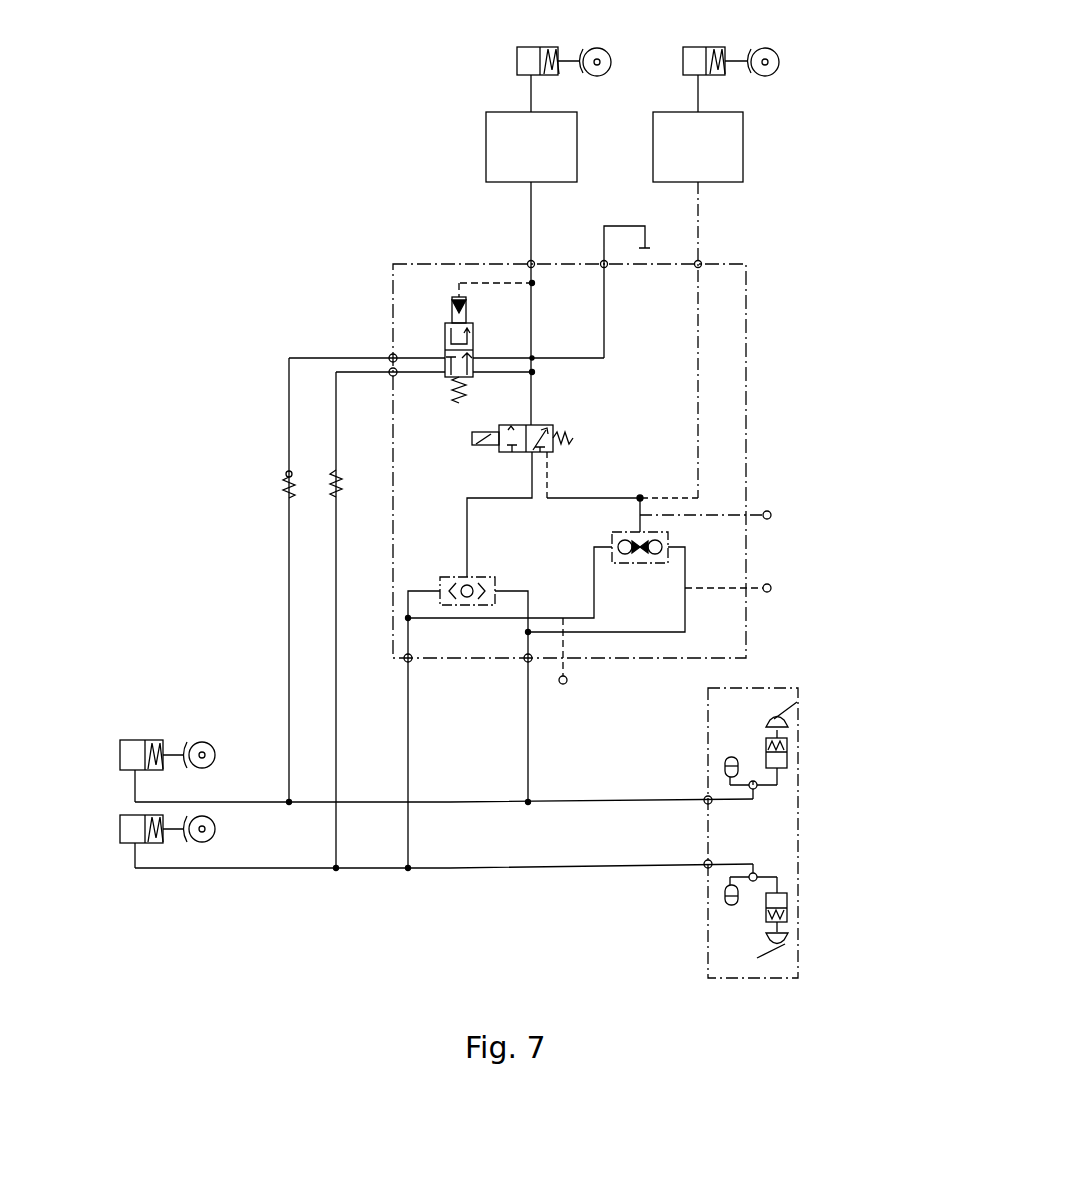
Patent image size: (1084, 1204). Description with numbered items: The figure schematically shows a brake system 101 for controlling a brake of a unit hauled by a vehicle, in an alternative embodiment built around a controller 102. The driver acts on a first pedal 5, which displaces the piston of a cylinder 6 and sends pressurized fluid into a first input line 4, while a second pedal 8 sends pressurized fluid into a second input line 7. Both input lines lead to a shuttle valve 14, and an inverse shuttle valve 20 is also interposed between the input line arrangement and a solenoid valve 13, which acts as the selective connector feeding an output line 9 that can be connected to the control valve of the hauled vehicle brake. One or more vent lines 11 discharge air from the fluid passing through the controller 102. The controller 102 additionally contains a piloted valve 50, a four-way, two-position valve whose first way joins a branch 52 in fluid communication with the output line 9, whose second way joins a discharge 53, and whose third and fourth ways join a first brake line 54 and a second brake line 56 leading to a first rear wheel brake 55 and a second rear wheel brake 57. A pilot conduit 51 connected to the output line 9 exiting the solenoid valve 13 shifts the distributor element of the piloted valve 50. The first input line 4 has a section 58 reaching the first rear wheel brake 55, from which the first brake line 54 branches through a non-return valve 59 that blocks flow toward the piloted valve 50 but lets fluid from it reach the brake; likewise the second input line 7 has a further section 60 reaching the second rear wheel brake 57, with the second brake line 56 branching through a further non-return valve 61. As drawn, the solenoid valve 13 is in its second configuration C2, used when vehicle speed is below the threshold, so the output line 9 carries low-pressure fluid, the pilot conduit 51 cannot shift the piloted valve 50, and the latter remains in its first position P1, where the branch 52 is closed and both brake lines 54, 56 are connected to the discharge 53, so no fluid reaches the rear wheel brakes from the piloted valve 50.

The brake system 101 is at (281, 92).
The controller 102 is at (752, 314).
The output line 9 is at (535, 222).
The discharge 53 is at (660, 250).
The pilot conduit 51 is at (482, 282).
The piloted valve 50 is at (445, 333).
The first position P1 is at (424, 340).
The branch 52 is at (494, 374).
The solenoid valve 13 is at (541, 424).
The second configuration C2 is at (515, 461).
The shuttle valve 14 is at (448, 576).
The inverse shuttle valve 20 is at (627, 533).
The vent lines 11 is at (772, 510).
The first brake line 54 is at (285, 437).
The non-return valve 59 is at (265, 494).
The further non-return valve 61 is at (314, 508).
The second brake line 56 is at (334, 655).
The first rear wheel brake 55 is at (134, 733).
The second rear wheel brake 57 is at (113, 860).
The first input line 4 is at (612, 802).
The second input line 7 is at (612, 868).
The section 58 is at (457, 803).
The further section 60 is at (291, 870).
The cylinder 6 is at (788, 760).
The first pedal 5 is at (785, 706).
The second pedal 8 is at (770, 960).